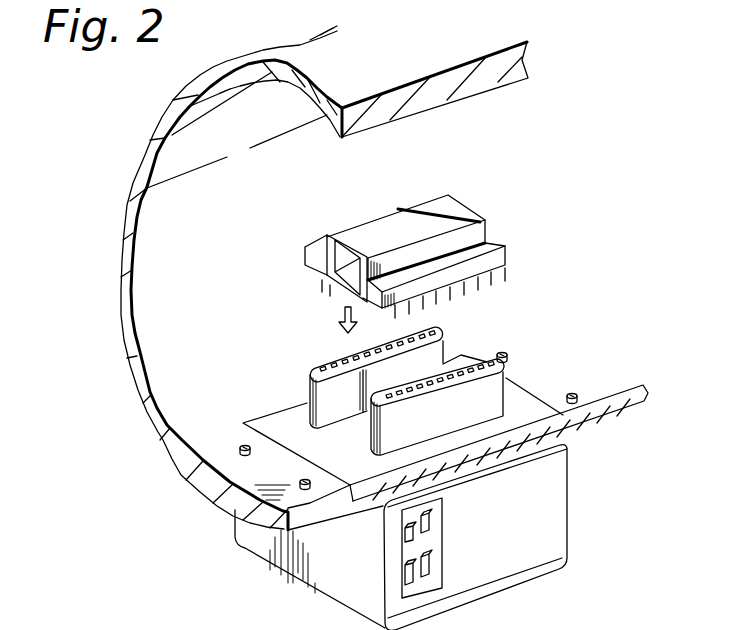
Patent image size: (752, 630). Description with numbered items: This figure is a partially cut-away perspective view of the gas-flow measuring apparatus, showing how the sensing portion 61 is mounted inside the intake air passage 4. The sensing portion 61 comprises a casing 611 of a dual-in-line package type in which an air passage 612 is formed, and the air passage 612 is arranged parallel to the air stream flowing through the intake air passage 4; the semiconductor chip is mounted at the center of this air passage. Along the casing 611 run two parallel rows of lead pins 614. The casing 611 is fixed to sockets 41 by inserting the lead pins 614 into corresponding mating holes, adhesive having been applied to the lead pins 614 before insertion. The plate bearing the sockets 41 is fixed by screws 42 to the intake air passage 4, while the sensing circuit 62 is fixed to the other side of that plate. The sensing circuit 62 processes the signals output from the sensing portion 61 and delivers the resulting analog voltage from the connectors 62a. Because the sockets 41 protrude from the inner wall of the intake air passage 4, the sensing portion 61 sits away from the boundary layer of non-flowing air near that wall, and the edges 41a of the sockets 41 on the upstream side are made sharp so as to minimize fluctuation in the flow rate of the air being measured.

The intake air passage 4 is at (490, 72).
The sensing portion 61 is at (406, 231).
The casing 611 is at (482, 232).
The air passage 612 is at (342, 256).
The lead pins 614 is at (320, 290).
The sockets 41 is at (315, 388).
The edges 41a is at (307, 418).
The screws 42 is at (243, 447).
The sensing circuit 62 is at (430, 537).
The connectors 62a is at (440, 527).